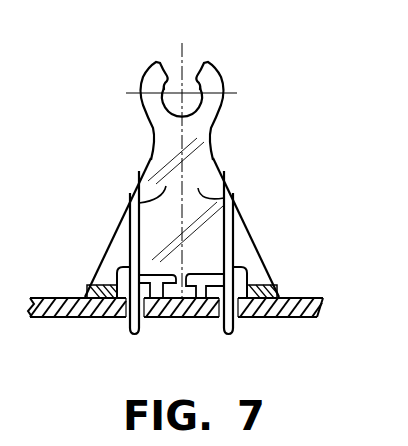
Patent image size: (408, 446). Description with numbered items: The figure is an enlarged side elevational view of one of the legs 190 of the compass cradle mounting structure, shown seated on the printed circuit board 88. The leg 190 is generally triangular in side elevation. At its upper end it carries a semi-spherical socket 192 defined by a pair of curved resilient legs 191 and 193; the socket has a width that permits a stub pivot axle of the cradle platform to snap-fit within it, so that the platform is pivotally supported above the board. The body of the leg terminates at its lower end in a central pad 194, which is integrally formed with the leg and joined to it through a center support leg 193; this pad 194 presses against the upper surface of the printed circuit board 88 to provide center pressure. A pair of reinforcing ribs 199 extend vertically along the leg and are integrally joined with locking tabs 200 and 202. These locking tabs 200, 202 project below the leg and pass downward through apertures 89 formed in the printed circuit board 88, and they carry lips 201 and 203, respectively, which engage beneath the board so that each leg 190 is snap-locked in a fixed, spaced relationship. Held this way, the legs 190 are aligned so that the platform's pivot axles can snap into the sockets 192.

The leg 190 is at (252, 201).
The curved resilient leg 191 is at (142, 80).
The semi-spherical socket 192 is at (197, 100).
The curved resilient leg / center support leg 193 is at (223, 82).
The reinforcing rib 199 is at (181, 184).
The central pad 194 is at (158, 288).
The locking tab 200 is at (134, 336).
The locking tab 202 is at (223, 334).
The lip 201 is at (117, 318).
The lip 203 is at (247, 318).
The printed circuit board 88 is at (297, 318).
The aperture 89 is at (213, 320).